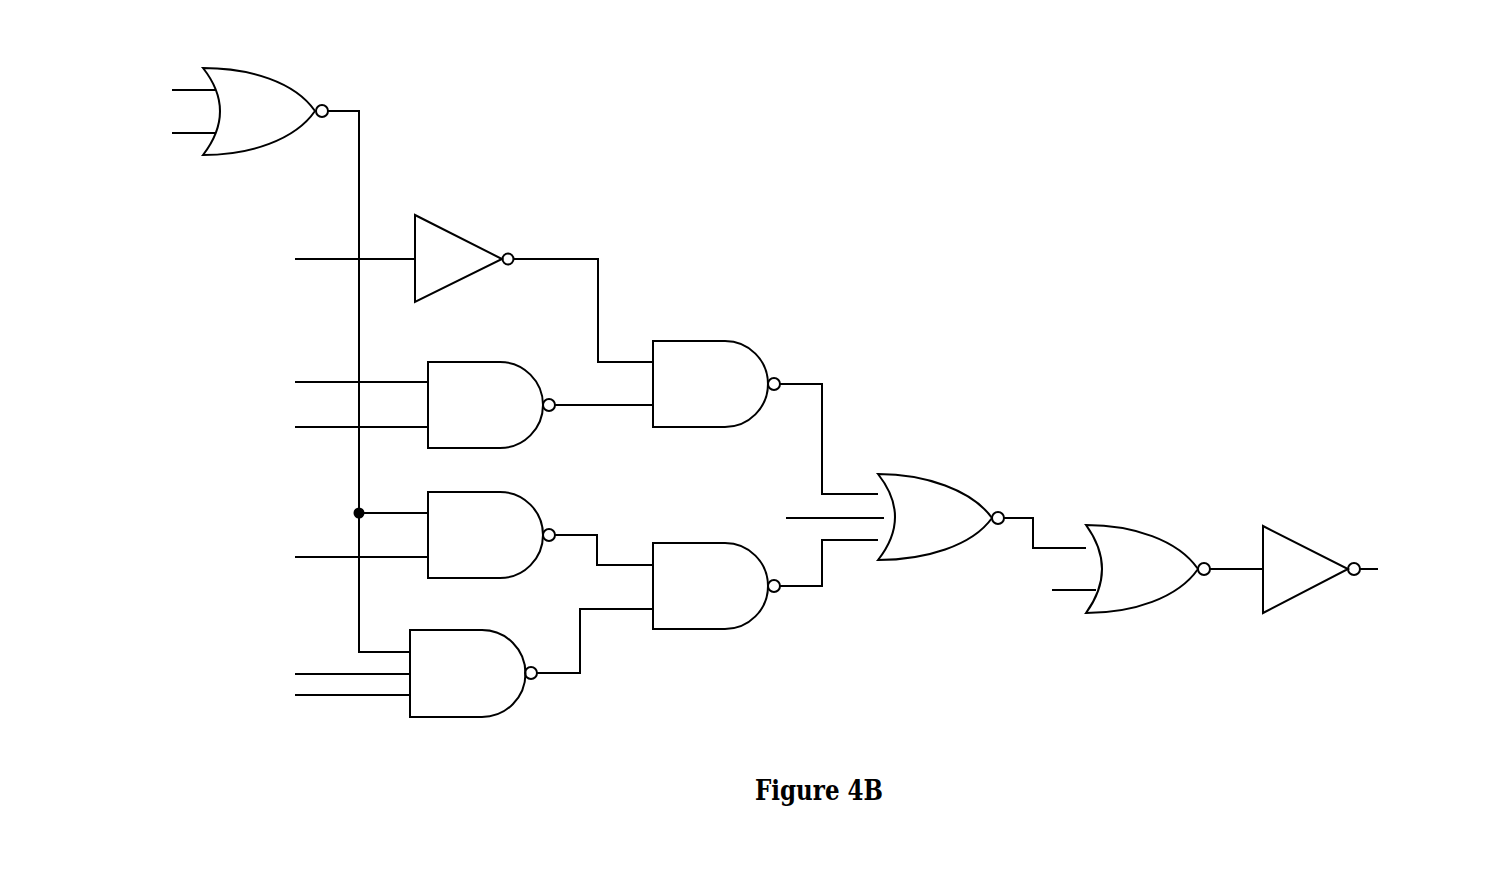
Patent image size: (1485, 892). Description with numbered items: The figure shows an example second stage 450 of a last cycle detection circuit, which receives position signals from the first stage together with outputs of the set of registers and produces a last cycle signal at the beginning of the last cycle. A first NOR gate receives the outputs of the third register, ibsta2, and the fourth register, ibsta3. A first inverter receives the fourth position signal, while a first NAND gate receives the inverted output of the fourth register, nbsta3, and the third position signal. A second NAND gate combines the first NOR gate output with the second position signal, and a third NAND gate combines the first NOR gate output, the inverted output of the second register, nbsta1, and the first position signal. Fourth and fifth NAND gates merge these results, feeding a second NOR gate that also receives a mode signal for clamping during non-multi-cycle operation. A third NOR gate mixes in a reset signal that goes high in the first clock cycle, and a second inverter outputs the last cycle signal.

The second stage 450 is at (838, 186).
The output of the fourth register ibsta3 is at (158, 89).
The output of the third register ibsta2 is at (156, 132).
The inverted output of the fourth register nbsta3 is at (320, 381).
The inverted output of the second register nbsta1 is at (314, 671).